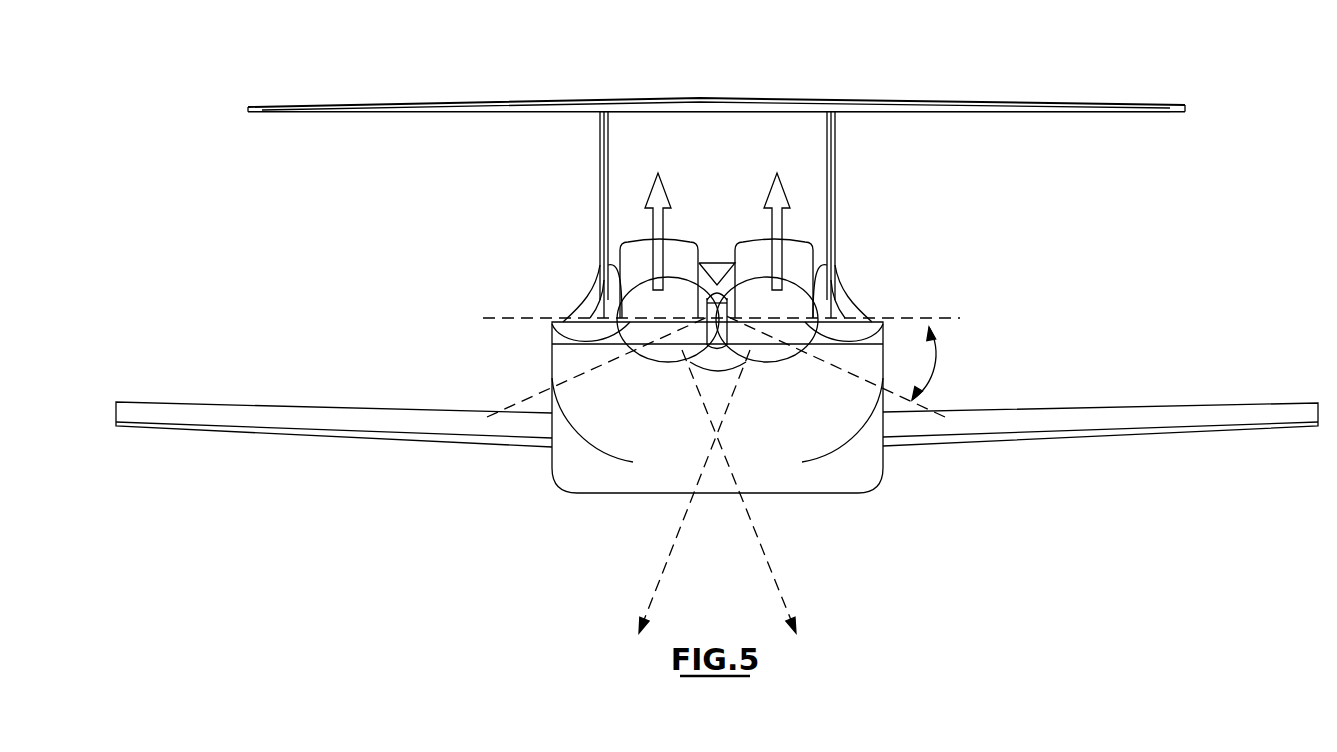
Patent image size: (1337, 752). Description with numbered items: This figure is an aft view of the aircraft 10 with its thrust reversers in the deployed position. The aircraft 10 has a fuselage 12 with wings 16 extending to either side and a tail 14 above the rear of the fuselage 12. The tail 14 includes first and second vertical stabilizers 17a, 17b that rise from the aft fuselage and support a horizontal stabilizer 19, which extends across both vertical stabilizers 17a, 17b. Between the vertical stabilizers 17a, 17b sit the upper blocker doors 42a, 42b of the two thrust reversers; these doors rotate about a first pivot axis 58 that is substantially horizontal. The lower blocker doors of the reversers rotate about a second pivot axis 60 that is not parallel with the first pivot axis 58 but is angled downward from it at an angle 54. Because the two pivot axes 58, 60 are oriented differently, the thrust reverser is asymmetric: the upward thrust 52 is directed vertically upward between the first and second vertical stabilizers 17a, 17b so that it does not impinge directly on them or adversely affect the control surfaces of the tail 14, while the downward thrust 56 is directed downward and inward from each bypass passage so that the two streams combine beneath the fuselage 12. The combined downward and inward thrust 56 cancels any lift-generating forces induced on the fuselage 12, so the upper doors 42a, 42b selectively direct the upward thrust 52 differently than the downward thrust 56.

The aircraft 10 is at (1170, 186).
The fuselage 12 is at (567, 478).
The tail 14 is at (986, 105).
The wings 16 is at (336, 422).
The first vertical stabilizer 17a is at (600, 160).
The second vertical stabilizer 17b is at (836, 160).
The horizontal stabilizer 19 is at (873, 108).
The upper blocker door 42a is at (635, 263).
The upper blocker door 42b is at (800, 263).
The upward thrust 52 is at (645, 222).
The angle 54 is at (936, 362).
The downward thrust 56 is at (662, 567).
The first pivot axis 58 is at (520, 318).
The second pivot axis 60 is at (516, 405).